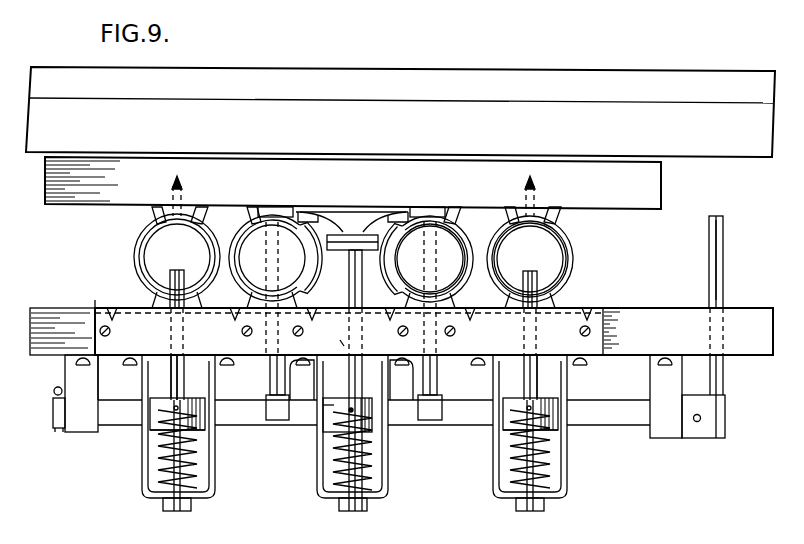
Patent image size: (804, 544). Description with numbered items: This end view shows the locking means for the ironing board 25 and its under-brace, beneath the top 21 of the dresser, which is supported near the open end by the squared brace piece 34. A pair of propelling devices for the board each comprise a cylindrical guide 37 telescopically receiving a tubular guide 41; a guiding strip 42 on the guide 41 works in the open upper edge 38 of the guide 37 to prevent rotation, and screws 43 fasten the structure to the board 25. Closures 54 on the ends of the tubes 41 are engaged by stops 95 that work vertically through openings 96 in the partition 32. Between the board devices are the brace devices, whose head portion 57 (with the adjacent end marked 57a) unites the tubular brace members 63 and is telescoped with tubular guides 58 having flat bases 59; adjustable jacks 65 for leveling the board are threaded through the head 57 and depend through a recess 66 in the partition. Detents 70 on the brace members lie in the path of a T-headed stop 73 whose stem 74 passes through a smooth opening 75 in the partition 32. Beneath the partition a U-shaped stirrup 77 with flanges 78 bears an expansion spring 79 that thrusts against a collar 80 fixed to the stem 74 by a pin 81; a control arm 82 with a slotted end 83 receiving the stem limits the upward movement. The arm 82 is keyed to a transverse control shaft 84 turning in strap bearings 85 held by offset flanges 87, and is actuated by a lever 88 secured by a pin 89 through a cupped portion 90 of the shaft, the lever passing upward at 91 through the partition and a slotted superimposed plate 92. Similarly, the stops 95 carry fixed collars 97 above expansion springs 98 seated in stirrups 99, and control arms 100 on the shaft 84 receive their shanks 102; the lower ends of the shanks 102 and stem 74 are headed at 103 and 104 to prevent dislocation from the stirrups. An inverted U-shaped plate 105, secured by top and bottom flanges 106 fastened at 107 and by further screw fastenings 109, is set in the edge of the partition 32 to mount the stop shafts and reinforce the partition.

The top of the dresser 21 is at (636, 82).
The brace piece or reinforcing frame member 34 is at (401, 121).
The ironing board 25 is at (353, 183).
The cylindrical metal guide 37 is at (139, 254).
The tubular metallic guide 41 is at (142, 268).
The open upper edge 38 is at (152, 218).
The guiding strip 42 is at (189, 210).
The screws 43 is at (170, 188).
The stops 95 is at (351, 324).
The closures 54 is at (530, 259).
The head portion 57 is at (468, 232).
The roller 57a is at (426, 259).
The tubular brace or supporting member 63 is at (398, 281).
The detents 70 is at (367, 214).
The T-headed stop member 73 is at (327, 243).
The stem 74 is at (348, 462).
The tubular guide members 58 is at (470, 296).
The partition 32 is at (434, 331).
The screw fastenings 109 is at (607, 342).
The recessed portion 66 is at (286, 346).
The fastening points 107 is at (112, 312).
The top and bottom flanges 106 is at (95, 306).
The flat base portions 59 is at (560, 305).
The openings 96 is at (188, 341).
The inverted U-shaped metal plate 105 is at (306, 359).
The smooth opening 75 is at (342, 346).
The control shaft 84 is at (466, 427).
The bearings 85 is at (80, 432).
The cupped portion 90 is at (696, 402).
The pin 89 is at (698, 423).
The superimposed plate 92 is at (724, 306).
The lever 88 is at (725, 278).
The upward portion of the lever 91 is at (727, 362).
The offset flanges 87 is at (626, 367).
The adjustable jacks 65 is at (270, 387).
The flanges 78 is at (351, 380).
The stirrups 99 is at (216, 472).
The control arms 100 is at (150, 398).
The fixed collars 97 is at (150, 432).
The expansion springs 98 is at (170, 470).
The headed lower end 103 is at (170, 511).
The shanks of the stops 102 is at (186, 392).
The stirrup 77 is at (396, 473).
The collar 80 is at (322, 415).
The slotted end 83 is at (366, 404).
The control arm 82 is at (298, 408).
The pin 81 is at (370, 420).
The expansion spring 79 is at (340, 476).
The headed lower end 104 is at (338, 511).